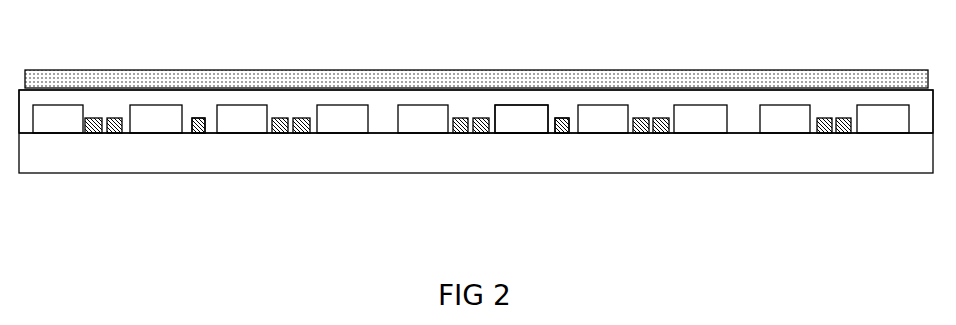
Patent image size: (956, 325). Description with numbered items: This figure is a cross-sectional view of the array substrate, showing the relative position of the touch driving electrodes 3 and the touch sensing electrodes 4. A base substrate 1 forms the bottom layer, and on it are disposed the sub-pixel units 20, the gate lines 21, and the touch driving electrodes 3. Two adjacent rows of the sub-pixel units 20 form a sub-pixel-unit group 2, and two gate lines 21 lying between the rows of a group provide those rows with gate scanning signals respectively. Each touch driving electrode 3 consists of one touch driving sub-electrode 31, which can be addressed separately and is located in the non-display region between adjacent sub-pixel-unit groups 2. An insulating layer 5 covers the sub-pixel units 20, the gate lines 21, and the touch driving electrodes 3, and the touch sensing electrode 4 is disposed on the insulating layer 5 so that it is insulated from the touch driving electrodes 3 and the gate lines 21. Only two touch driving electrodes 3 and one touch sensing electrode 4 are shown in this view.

The base substrate 1 is at (365, 162).
The sub-pixel-unit group 2 is at (52, 128).
The sub-pixel unit 20 is at (517, 122).
The gate line 21 is at (97, 124).
The touch driving electrode 3 is at (200, 127).
The touch driving sub-electrode 31 is at (380, 125).
The touch sensing electrode 4 is at (280, 85).
The insulating layer 5 is at (378, 105).